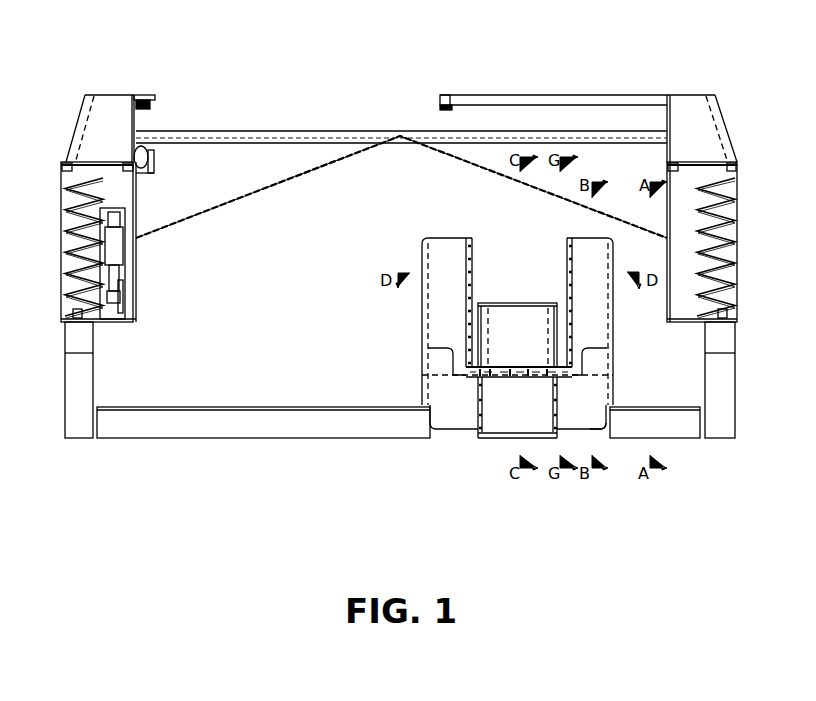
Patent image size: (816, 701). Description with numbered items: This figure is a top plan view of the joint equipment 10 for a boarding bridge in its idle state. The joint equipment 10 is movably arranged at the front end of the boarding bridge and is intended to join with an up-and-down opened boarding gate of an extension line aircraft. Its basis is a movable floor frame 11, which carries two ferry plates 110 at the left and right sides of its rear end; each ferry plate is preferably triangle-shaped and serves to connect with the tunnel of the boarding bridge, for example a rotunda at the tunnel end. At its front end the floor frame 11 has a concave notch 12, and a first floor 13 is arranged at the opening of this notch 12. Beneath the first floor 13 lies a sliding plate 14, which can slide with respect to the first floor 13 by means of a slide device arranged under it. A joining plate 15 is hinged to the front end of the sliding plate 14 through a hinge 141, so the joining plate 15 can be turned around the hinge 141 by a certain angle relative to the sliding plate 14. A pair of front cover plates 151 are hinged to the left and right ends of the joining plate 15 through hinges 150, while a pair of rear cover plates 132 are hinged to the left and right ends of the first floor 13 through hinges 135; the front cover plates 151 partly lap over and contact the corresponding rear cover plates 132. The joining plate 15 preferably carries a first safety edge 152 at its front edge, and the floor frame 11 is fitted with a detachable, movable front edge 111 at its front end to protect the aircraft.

The joint equipment 10 is at (372, 37).
The ferry plate 110 is at (213, 155).
The floor frame 11 is at (295, 382).
The front edge 111 is at (218, 423).
The notch 12 is at (601, 441).
The first floor 13 is at (522, 275).
The rear cover plate 132 is at (445, 304).
The hinge 135 is at (466, 250).
The sliding plate 14 is at (498, 410).
The hinge 141 is at (520, 362).
The joining plate 15 is at (498, 432).
The hinge 150 is at (557, 392).
The front cover plate 151 is at (445, 387).
The first safety edge 152 is at (503, 439).